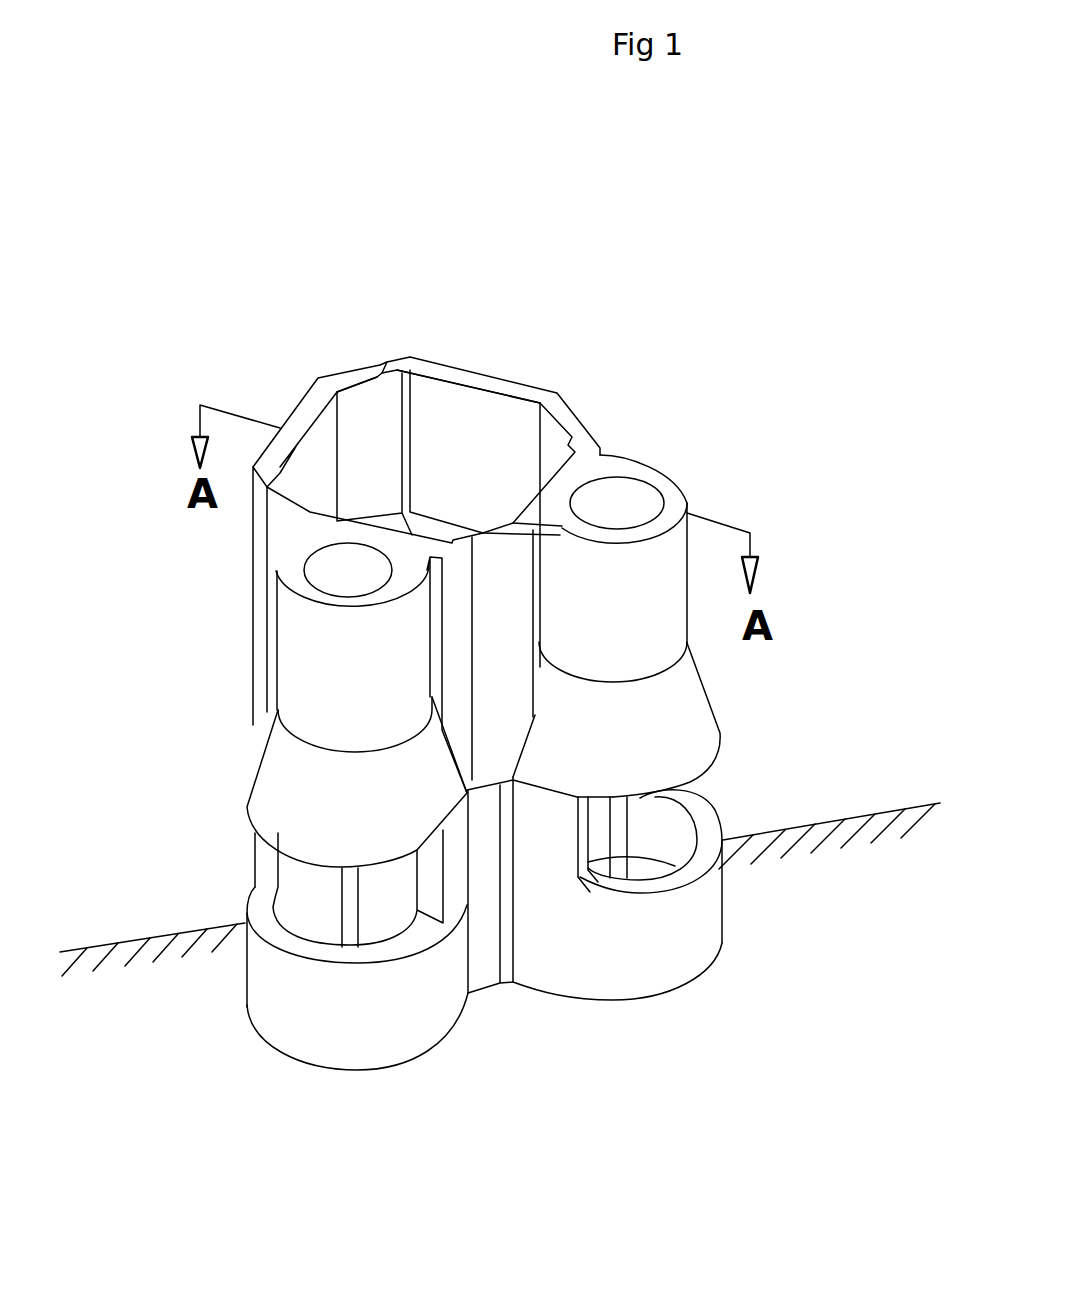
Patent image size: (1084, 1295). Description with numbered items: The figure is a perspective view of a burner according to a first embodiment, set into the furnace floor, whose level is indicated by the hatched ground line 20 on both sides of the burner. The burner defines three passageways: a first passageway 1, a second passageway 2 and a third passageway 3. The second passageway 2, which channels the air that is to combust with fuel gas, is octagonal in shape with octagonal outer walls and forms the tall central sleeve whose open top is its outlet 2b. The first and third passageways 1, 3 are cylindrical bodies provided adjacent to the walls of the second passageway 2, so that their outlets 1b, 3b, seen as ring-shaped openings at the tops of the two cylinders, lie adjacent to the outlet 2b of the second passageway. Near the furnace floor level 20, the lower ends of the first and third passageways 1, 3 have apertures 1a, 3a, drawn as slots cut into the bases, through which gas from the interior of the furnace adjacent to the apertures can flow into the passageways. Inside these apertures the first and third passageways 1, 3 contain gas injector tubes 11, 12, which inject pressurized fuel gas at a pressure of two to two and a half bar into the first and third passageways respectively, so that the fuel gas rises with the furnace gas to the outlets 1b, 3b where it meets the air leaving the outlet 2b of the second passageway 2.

The first passageway 1 is at (657, 625).
The aperture of first passageway 1a is at (660, 810).
The outlet of first passageway 1b is at (637, 493).
The second passageway 2 is at (493, 380).
The outlet of second passageway 2b is at (427, 407).
The third passageway 3 is at (342, 682).
The aperture of third passageway 3a is at (290, 868).
The outlet of third passageway 3b is at (340, 570).
The gas injector tube 11 is at (618, 852).
The gas injector tube 12 is at (350, 913).
The furnace floor level 20 is at (160, 938).